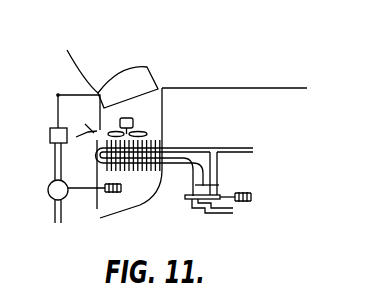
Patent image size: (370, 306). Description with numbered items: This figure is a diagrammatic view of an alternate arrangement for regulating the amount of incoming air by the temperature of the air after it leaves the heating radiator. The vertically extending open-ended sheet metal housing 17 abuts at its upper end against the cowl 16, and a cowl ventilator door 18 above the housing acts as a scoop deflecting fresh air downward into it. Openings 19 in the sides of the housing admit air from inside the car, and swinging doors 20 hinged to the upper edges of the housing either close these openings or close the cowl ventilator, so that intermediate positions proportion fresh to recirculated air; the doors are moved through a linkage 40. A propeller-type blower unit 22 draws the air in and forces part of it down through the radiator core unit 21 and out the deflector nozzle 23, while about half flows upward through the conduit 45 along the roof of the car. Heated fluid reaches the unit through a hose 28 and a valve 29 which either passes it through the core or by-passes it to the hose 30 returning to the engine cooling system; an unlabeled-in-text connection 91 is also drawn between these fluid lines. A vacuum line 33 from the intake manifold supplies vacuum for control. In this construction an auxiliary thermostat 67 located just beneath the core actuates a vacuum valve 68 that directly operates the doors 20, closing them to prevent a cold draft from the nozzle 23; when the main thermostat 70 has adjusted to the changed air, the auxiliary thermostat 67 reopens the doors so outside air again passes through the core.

The cowl 16 is at (95, 90).
The cowl ventilator door 18 is at (146, 71).
The linkage 40 is at (118, 84).
The swinging doors 20 is at (100, 113).
The housing 17 is at (97, 172).
The deflector nozzle 23 is at (100, 218).
The conduit 45 is at (82, 136).
The blower unit 22 is at (128, 121).
The openings 19 is at (163, 126).
The radiator core unit 21 is at (164, 150).
The hose 30 is at (236, 147).
The passage 91 is at (218, 160).
The valve 29 is at (218, 188).
The hose 28 is at (219, 215).
The thermostat 70 is at (252, 200).
The auxiliary thermostat 67 is at (121, 188).
The vacuum valve 68 is at (48, 189).
The vacuum line 33 is at (52, 215).